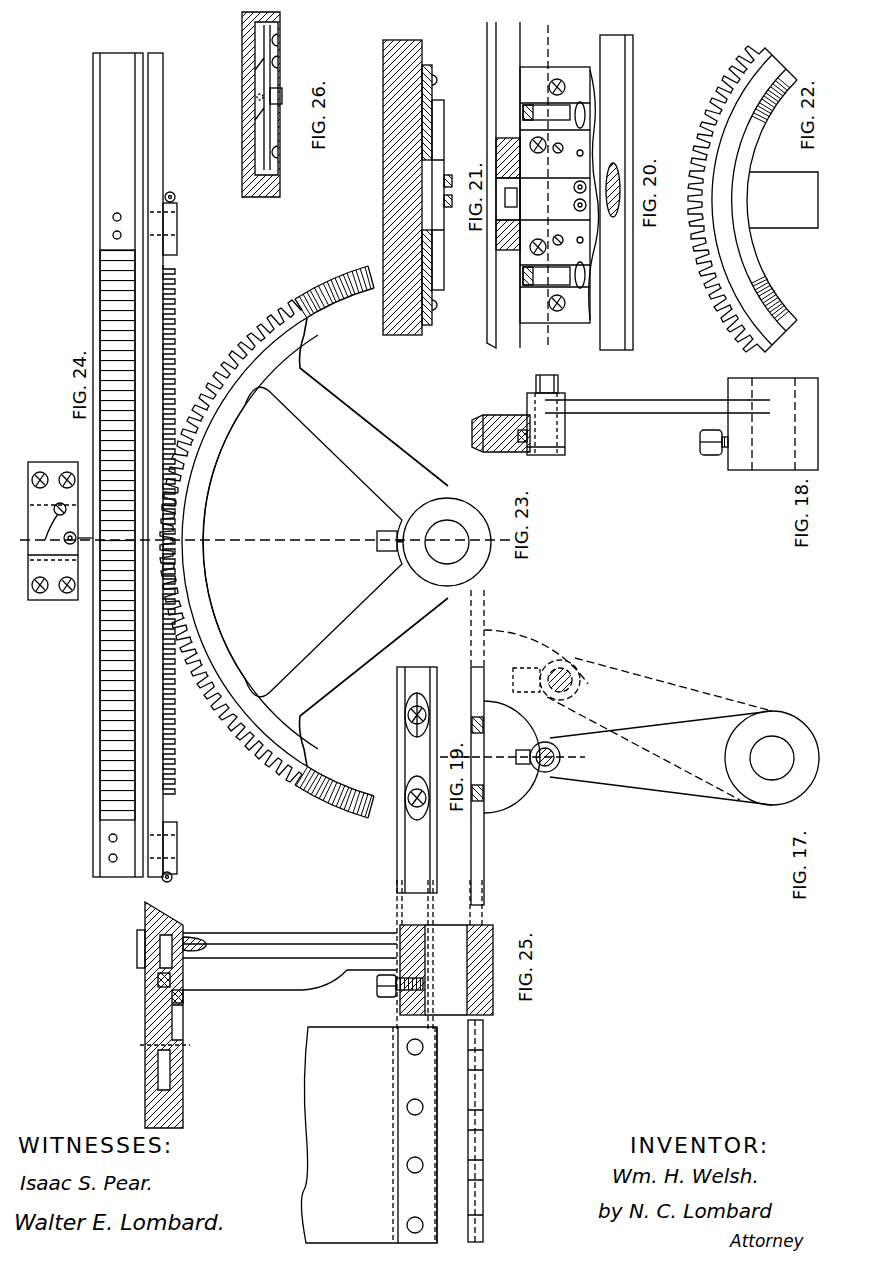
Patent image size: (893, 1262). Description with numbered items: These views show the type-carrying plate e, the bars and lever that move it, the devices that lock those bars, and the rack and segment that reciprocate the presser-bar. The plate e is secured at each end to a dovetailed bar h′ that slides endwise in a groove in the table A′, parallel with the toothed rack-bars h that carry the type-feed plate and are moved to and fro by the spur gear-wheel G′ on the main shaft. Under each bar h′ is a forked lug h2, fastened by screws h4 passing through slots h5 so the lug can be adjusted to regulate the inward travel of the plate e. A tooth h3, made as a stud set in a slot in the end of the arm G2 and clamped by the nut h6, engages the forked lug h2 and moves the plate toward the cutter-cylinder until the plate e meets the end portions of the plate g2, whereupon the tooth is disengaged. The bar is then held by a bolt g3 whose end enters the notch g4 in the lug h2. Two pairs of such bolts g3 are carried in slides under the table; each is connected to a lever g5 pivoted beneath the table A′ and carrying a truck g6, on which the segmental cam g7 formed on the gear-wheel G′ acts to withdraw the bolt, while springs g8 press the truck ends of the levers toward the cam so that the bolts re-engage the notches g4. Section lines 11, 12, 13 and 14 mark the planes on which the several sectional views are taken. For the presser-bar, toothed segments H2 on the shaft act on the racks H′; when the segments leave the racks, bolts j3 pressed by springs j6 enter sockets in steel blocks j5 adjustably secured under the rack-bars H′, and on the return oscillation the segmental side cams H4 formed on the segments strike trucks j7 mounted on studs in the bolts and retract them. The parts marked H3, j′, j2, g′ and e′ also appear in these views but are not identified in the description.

In FIG. 24, the rack H′ is at (165, 770).
In FIG. 25, the rack H′ is at (137, 950).
In FIG. 23, the toothed segment H2 is at (320, 652).
In FIG. 25, the toothed segment H2 is at (312, 934).
In FIG. 25, the arm H3 is at (228, 984).
In FIG. 23, the segmental side cam H4 is at (300, 342).
In FIG. 26, the table A′ is at (250, 136).
In FIG. 21, the table A′ is at (385, 140).
In FIG. 24, the pin j′ is at (66, 531).
In FIG. 24, the pivot pin j2 is at (175, 196).
In FIG. 24, the locking bolt j3 is at (84, 545).
In FIG. 25, the locking bolt j3 is at (158, 983).
In FIG. 24, the steel block j5 is at (177, 240).
In FIG. 24, the spring j6 is at (49, 521).
In FIG. 26, the spring j6 is at (278, 72).
In FIG. 26, the truck j7 is at (282, 95).
In FIG. 25, the truck j7 is at (183, 996).
In FIG. 24, the section line 13 is at (43, 531).
In FIG. 23, the section line 13 is at (266, 542).
In FIG. 20, the section line 12 is at (548, 189).
In FIG. 19, the section line 11 is at (456, 755).
In FIG. 17, the section line 11 is at (531, 755).
In FIG. 25, the section line 14 is at (166, 1042).
In FIG. 20, the spur gear-wheel G′ is at (625, 100).
In FIG. 22, the spur gear-wheel G′ is at (753, 199).
In FIG. 18, the arm G2 is at (655, 410).
In FIG. 17, the arm G2 is at (635, 752).
In FIG. 22, the rack segment g′ is at (748, 150).
In FIG. 20, the plate g2 is at (517, 195).
In FIG. 20, the bolt g3 is at (514, 100).
In FIG. 21, the notch g4 is at (452, 198).
In FIG. 18, the notch g4 is at (521, 430).
In FIG. 17, the notch g4 is at (505, 738).
In FIG. 21, the lever g5 is at (444, 120).
In FIG. 20, the lever g5 is at (585, 195).
In FIG. 21, the truck g6 is at (452, 176).
In FIG. 20, the truck g6 is at (574, 178).
In FIG. 20, the segmental cam g7 is at (598, 195).
In FIG. 20, the spring g8 is at (570, 212).
In FIG. 20, the dovetailed bar h′ is at (500, 42).
In FIG. 18, the dovetailed bar h′ is at (492, 433).
In FIG. 19, the dovetailed bar h′ is at (417, 780).
In FIG. 17, the dovetailed bar h′ is at (472, 862).
In FIG. 25, the dovetailed bar h′ is at (440, 1160).
In FIG. 20, the forked lug h2 is at (508, 194).
In FIG. 18, the forked lug h2 is at (502, 445).
In FIG. 17, the forked lug h2 is at (536, 721).
In FIG. 18, the tooth h3 is at (560, 432).
In FIG. 17, the tooth h3 is at (550, 768).
In FIG. 19, the screw h4 is at (405, 718).
In FIG. 19, the slot h5 is at (412, 700).
In FIG. 18, the clamping-nut h6 is at (536, 384).
In FIG. 25, the toothed rack-bar h is at (148, 1070).
In FIG. 25, the type-carrying plate e is at (369, 1135).
In FIG. 25, the rod e′ is at (460, 1128).